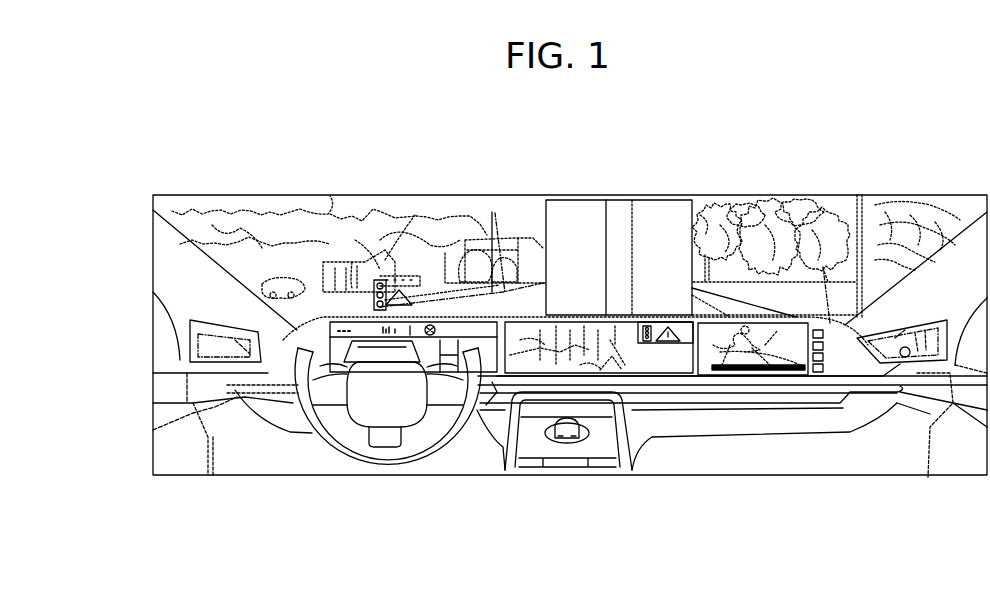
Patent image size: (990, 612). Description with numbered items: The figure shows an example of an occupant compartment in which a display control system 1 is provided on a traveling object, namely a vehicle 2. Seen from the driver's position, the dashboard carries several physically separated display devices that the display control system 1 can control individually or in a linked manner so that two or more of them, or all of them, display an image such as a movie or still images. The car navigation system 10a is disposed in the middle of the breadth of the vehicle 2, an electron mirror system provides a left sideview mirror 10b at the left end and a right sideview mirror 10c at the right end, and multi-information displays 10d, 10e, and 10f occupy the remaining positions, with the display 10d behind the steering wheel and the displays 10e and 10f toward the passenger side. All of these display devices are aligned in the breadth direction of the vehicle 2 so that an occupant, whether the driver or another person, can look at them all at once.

The display control system 1 is at (946, 145).
The vehicle 2 is at (845, 467).
The car navigation system 10a is at (562, 470).
The left sideview mirror 10b is at (230, 363).
The right sideview mirror 10c is at (917, 365).
The multi-information display 10d is at (470, 345).
The multi-information display 10e is at (648, 343).
The multi-information display 10f is at (755, 374).